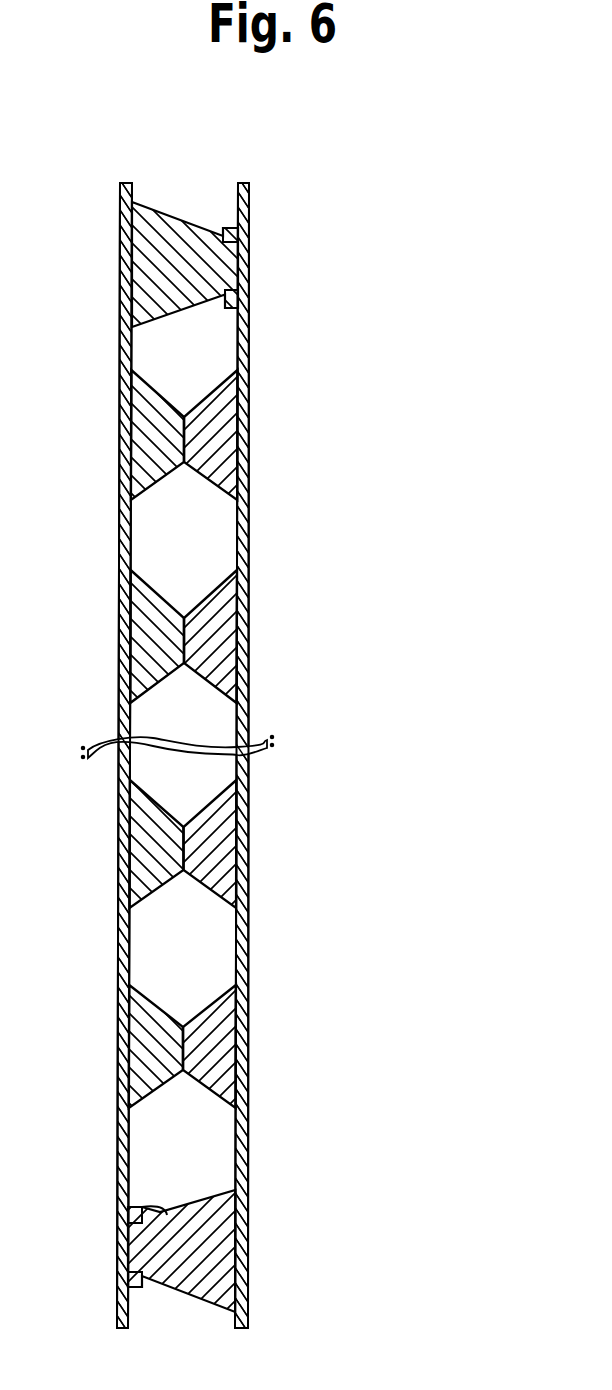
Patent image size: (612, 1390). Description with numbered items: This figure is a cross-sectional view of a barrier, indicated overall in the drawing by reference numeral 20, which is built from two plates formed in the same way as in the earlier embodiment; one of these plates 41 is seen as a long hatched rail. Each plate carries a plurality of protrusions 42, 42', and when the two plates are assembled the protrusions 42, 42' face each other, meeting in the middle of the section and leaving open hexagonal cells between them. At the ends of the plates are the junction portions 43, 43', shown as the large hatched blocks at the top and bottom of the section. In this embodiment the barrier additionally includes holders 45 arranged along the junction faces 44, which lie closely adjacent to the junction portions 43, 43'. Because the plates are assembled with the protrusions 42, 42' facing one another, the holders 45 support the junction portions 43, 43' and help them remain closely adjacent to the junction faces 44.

The spacer assembly 20 is at (418, 230).
The plate 41 is at (241, 323).
The protrusions 42 is at (123, 739).
The protrusions 42' is at (248, 739).
The junction portions 43 is at (226, 244).
The junction portions 43' is at (139, 1250).
The junction faces 44 is at (239, 270).
The holders 45 is at (239, 238).